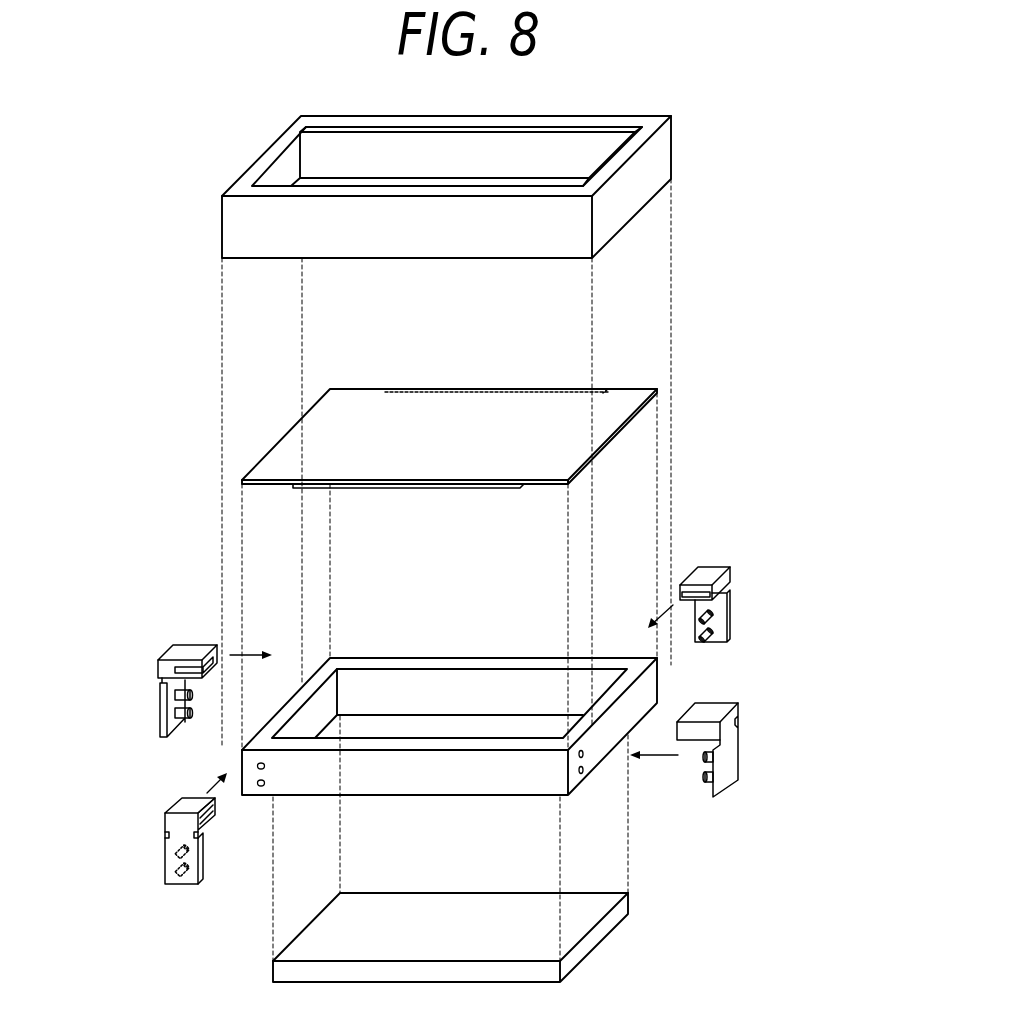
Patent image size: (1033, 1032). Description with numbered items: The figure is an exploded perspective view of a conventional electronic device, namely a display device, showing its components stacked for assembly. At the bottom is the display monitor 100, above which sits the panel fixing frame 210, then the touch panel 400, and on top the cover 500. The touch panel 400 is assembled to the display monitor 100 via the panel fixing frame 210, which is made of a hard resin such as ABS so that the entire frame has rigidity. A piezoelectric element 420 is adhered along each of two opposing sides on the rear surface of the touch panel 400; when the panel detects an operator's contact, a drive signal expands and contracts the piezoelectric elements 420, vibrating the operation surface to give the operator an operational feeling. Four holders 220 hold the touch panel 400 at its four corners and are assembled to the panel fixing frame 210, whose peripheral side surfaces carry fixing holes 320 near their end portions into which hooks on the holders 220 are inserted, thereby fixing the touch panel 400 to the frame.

The display monitor 100 is at (585, 947).
The panel fixing frame 210 is at (448, 655).
The holder 220 is at (170, 655).
The fixing hole 320 is at (258, 795).
The touch panel 400 is at (370, 405).
The piezoelectric element 420 is at (493, 388).
The cover 500 is at (663, 150).